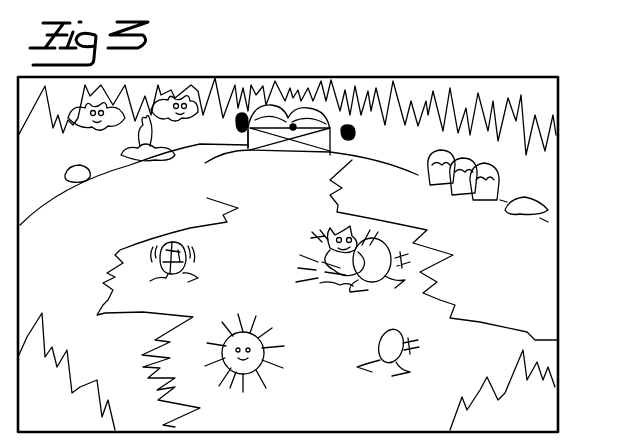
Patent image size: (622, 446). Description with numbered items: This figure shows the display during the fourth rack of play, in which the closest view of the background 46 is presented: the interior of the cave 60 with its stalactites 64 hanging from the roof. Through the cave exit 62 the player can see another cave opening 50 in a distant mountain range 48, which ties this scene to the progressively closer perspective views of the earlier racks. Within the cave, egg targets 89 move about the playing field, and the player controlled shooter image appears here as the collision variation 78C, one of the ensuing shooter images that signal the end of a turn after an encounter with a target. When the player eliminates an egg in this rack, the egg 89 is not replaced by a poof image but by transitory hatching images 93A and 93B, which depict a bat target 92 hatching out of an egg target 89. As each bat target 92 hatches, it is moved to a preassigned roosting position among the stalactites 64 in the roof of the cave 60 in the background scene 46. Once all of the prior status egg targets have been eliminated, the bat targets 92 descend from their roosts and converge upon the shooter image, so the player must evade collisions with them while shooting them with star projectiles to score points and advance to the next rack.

The background 46 is at (561, 256).
The mountain range 48 is at (314, 100).
The cave opening 50 is at (295, 130).
The cave 60 is at (91, 238).
The cave exit 62 is at (249, 131).
The stalactites 64 is at (254, 104).
The shooter image 78C is at (347, 228).
The egg target 89 is at (375, 250).
The bat target 92 is at (68, 127).
The hatching image 93A is at (190, 260).
The hatching image 93B is at (245, 332).